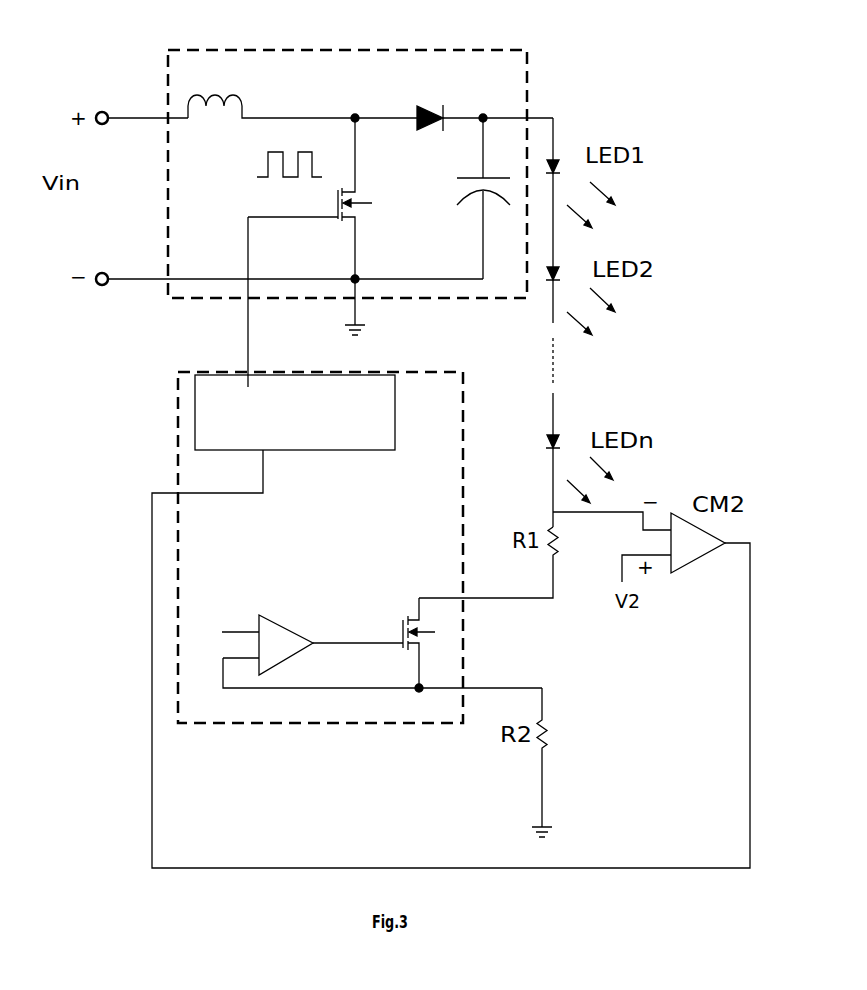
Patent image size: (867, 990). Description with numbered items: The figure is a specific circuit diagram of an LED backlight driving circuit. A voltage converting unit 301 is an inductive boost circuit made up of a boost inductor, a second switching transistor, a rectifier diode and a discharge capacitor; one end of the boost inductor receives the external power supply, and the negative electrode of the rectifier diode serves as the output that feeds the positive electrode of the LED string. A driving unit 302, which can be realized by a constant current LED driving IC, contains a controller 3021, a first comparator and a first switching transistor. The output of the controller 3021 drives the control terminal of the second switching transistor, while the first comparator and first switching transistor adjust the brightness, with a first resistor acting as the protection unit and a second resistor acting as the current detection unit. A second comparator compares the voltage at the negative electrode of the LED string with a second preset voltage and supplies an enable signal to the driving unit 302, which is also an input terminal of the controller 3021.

The voltage converting unit 301 is at (315, 50).
The driving unit 302 is at (177, 448).
The controller 3021 is at (195, 412).